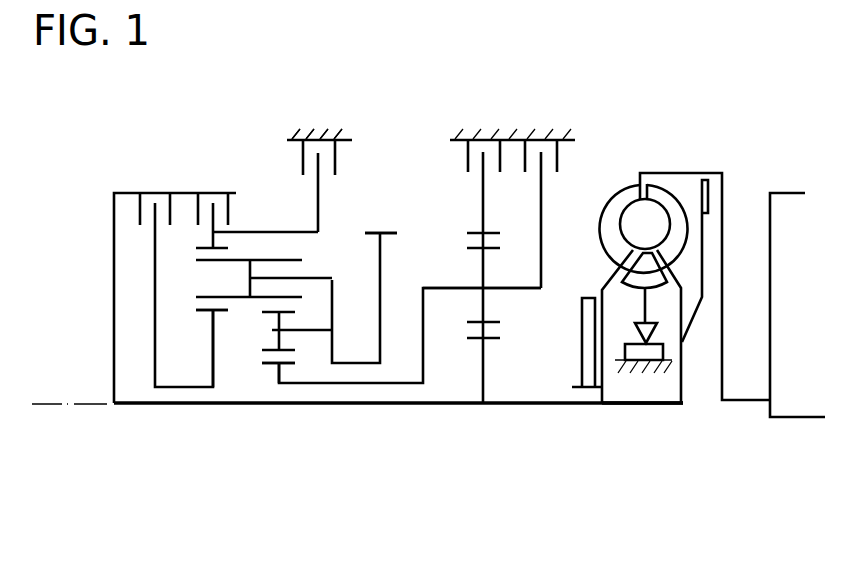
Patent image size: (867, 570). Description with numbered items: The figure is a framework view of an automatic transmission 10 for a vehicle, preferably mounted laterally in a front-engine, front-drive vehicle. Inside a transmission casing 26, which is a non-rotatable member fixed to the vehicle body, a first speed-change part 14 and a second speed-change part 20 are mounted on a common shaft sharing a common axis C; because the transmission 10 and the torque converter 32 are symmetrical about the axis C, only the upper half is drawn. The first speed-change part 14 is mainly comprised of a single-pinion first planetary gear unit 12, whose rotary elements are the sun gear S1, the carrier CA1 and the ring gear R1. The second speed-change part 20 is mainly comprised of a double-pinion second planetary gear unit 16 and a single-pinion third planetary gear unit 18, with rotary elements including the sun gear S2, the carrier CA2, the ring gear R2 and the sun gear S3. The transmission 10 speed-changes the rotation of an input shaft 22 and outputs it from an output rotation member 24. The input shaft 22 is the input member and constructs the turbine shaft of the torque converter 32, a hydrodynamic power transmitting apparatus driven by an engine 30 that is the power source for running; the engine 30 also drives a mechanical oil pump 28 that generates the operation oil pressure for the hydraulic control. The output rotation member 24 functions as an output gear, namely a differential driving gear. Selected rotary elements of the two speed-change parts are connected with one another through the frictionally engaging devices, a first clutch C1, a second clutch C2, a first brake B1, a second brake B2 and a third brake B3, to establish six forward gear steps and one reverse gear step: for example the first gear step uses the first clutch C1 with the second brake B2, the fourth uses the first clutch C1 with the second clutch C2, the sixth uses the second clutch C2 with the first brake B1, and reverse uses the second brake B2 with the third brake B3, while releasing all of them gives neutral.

The automatic transmission 10 is at (594, 104).
The first planetary gear unit 12 is at (484, 427).
The first speed-change part 14 is at (569, 428).
The second planetary gear unit 16 is at (284, 425).
The third planetary gear unit 18 is at (216, 418).
The second speed-change part 20 is at (150, 432).
The input shaft 22 is at (644, 407).
The output rotation member 24 is at (392, 230).
The transmission casing 26 is at (320, 135).
The mechanical oil pump 28 is at (583, 297).
The engine 30 is at (787, 205).
The torque converter 32 is at (672, 158).
The common axis C is at (82, 403).
The first clutch C1 is at (147, 195).
The second clutch C2 is at (207, 206).
The first brake B1 is at (556, 156).
The second brake B2 is at (327, 180).
The third brake B3 is at (504, 156).
The ring gear R1 is at (477, 231).
The ring gear R2 is at (207, 247).
The sun gear S1 is at (490, 341).
The sun gear S2 is at (267, 368).
The sun gear S3 is at (207, 315).
The carrier CA1 is at (517, 290).
The carrier CA2 is at (317, 278).